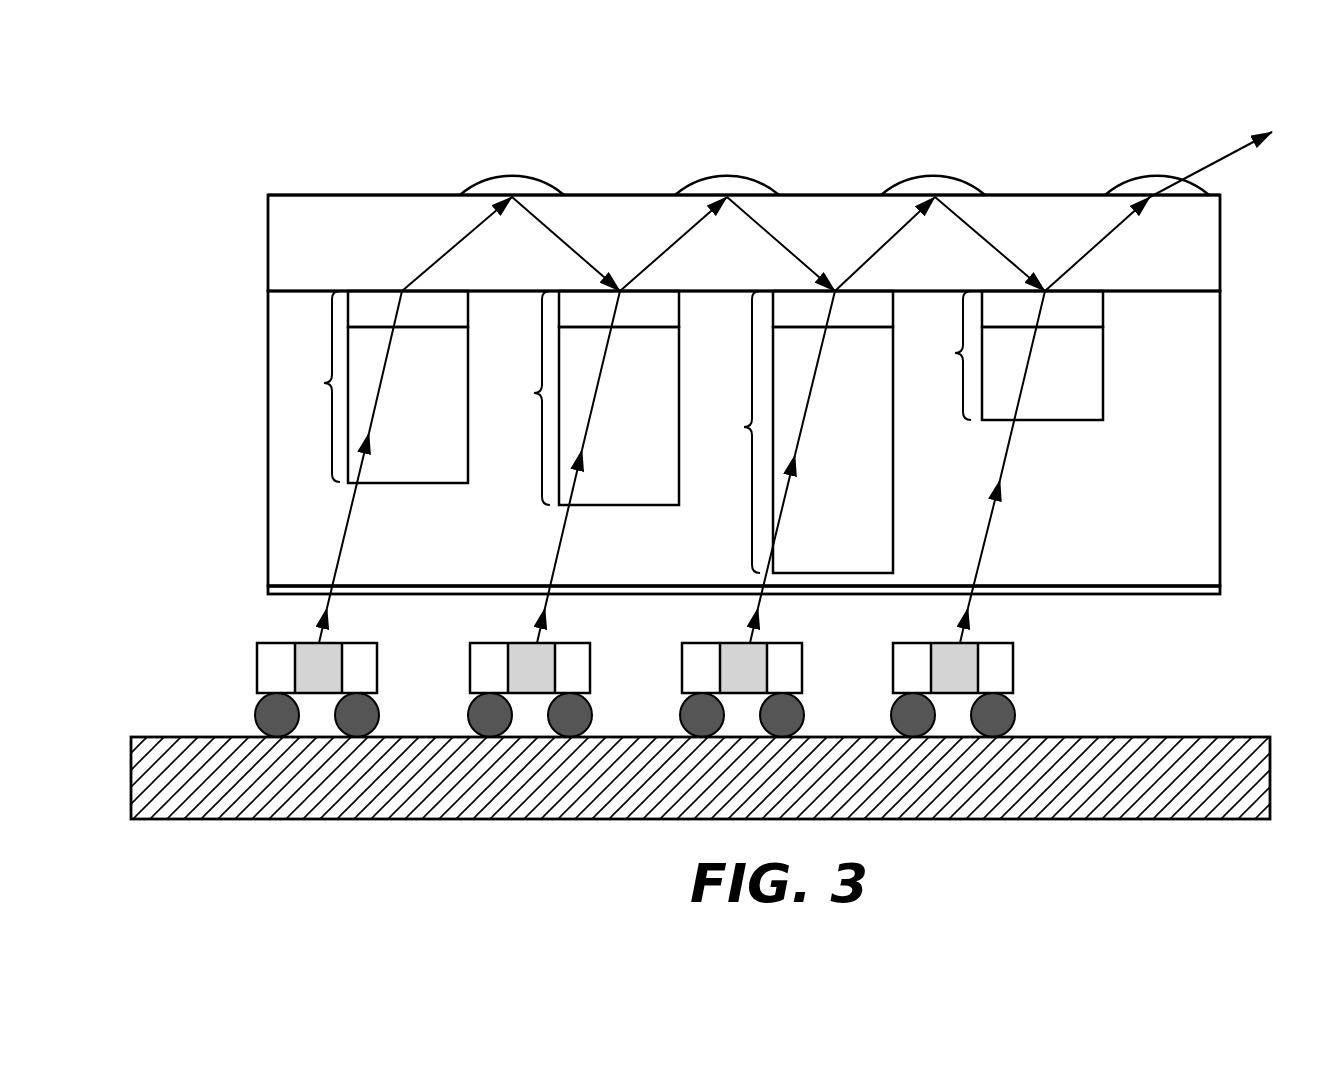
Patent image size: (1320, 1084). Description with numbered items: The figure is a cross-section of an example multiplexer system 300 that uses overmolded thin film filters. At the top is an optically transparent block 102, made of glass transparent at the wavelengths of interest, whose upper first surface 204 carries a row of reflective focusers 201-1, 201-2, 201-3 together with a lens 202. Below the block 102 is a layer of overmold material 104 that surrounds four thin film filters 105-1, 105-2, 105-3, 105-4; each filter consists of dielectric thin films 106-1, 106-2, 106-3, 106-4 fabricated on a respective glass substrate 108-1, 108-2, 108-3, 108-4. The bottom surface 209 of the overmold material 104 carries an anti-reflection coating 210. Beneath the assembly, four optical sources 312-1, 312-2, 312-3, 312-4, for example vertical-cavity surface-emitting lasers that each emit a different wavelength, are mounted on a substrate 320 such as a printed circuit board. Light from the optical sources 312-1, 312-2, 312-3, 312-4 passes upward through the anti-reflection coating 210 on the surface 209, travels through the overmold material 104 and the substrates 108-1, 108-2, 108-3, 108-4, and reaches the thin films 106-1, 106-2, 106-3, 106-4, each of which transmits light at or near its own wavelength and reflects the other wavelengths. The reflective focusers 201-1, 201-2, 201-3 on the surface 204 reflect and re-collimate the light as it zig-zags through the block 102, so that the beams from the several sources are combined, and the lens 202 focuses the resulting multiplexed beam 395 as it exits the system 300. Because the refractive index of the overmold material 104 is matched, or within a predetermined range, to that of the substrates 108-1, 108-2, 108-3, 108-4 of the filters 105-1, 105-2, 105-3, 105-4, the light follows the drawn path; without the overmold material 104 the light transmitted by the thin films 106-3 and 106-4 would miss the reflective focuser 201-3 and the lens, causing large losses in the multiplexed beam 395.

The multiplexer system 300 is at (327, 140).
The optically transparent block 102 is at (275, 245).
The overmold material 104 is at (268, 470).
The anti-reflection coating 210 is at (268, 590).
The first surface 204 is at (290, 197).
The surface of the overmold material 209 is at (382, 582).
The reflective focuser 201-1 is at (500, 178).
The reflective focuser 201-2 is at (707, 178).
The reflective focuser 201-3 is at (912, 178).
The lens 202 is at (1130, 175).
The multiplexed beam 395 is at (1222, 152).
The thin film filter 105-1 is at (306, 386).
The thin film filter 105-2 is at (514, 398).
The thin film filter 105-3 is at (721, 432).
The thin film filter 105-4 is at (935, 355).
The dielectric thin films 106-1 is at (465, 321).
The dielectric thin films 106-2 is at (678, 321).
The dielectric thin films 106-3 is at (892, 321).
The dielectric thin films 106-4 is at (1100, 321).
The substrate 108-1 is at (445, 406).
The substrate 108-2 is at (652, 486).
The substrate 108-3 is at (862, 506).
The substrate 108-4 is at (1090, 394).
The optical source 312-1 is at (317, 660).
The optical source 312-2 is at (535, 660).
The optical source 312-3 is at (748, 660).
The optical source 312-4 is at (958, 660).
The substrate 320 is at (352, 820).